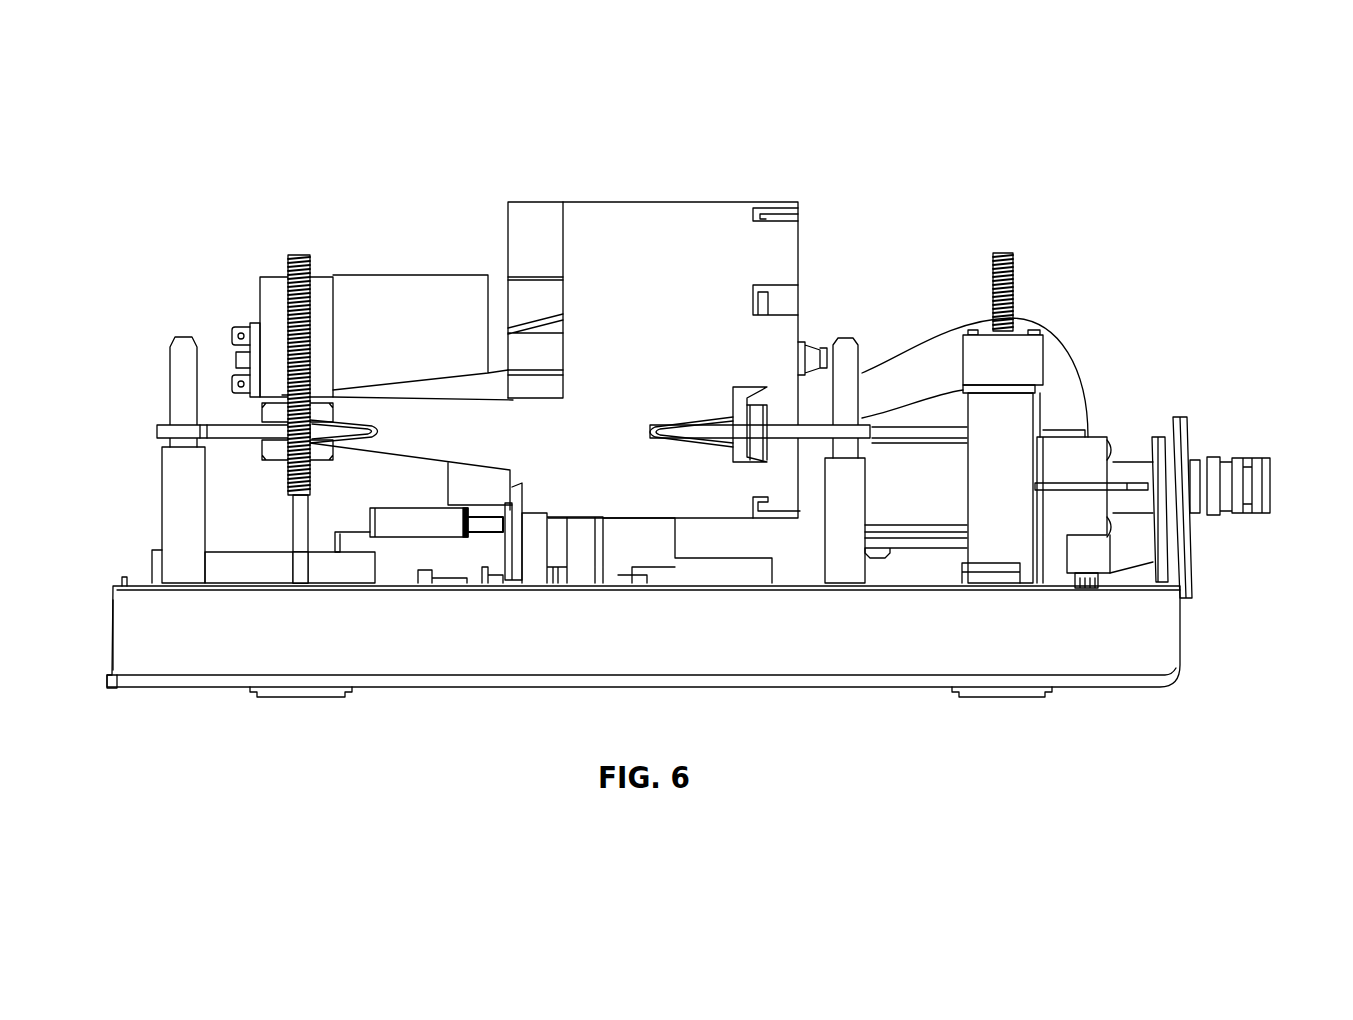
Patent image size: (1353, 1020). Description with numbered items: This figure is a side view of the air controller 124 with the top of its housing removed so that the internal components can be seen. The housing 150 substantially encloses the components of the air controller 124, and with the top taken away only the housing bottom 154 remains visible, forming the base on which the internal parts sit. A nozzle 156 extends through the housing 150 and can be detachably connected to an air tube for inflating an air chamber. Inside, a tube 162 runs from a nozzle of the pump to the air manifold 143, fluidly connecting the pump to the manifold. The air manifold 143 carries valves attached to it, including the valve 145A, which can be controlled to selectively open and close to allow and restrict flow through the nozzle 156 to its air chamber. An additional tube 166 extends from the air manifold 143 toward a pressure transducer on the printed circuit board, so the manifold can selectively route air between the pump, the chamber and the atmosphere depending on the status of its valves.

The air controller 124 is at (210, 115).
The air manifold 143 is at (1098, 433).
The valve 145A is at (907, 482).
The housing 150 is at (128, 682).
The housing bottom 154 is at (190, 682).
The nozzle 156 is at (1273, 497).
The tube 162 is at (1066, 356).
The tube 166 is at (1094, 578).